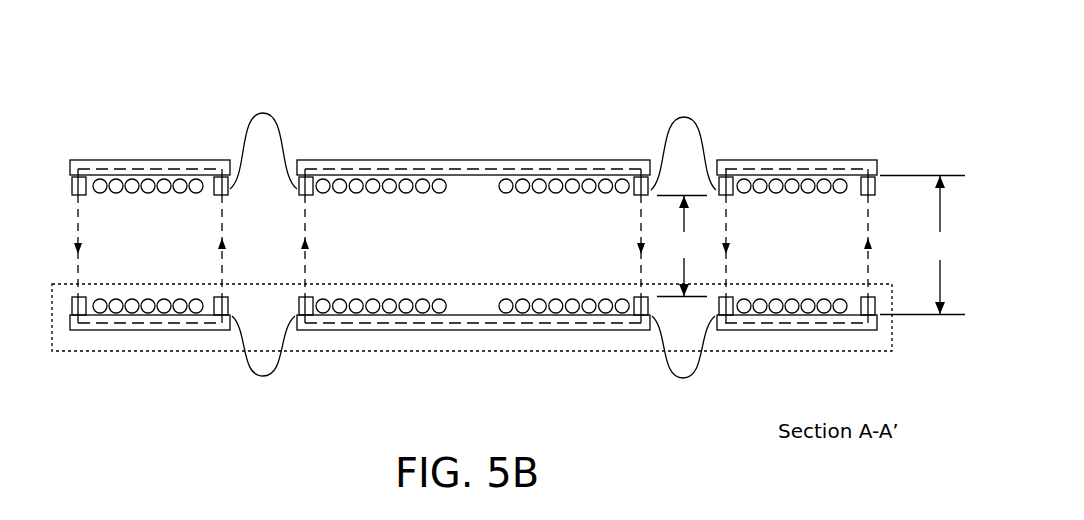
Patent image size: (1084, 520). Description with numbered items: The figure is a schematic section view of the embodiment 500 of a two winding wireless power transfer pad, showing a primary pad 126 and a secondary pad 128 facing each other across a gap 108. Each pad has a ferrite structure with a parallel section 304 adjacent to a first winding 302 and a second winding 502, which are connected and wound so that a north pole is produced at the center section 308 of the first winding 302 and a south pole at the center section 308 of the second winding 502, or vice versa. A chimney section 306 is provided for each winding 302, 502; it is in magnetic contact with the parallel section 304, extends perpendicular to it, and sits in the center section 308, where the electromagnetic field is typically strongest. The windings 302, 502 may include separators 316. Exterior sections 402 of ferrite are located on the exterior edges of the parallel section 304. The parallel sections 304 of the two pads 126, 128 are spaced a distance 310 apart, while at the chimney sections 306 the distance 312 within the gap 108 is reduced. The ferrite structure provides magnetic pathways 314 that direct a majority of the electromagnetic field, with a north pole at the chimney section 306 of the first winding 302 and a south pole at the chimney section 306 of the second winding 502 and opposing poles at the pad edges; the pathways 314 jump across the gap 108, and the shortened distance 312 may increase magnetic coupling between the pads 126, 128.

The embodiment 500 is at (128, 66).
The secondary pad 128 is at (356, 148).
The primary pad 126 is at (353, 362).
The gap 108 is at (127, 262).
The parallel section 304 is at (162, 161).
The first winding 302 is at (196, 183).
The second winding 502 is at (556, 182).
The exterior section 402 is at (72, 165).
The chimney section 306 is at (473, 251).
The center section 308 is at (256, 188).
The magnetic pathway 314 is at (222, 212).
The separator 316 is at (548, 196).
The distance between chimney sections 312 is at (682, 246).
The distance between parallel sections 310 is at (922, 245).